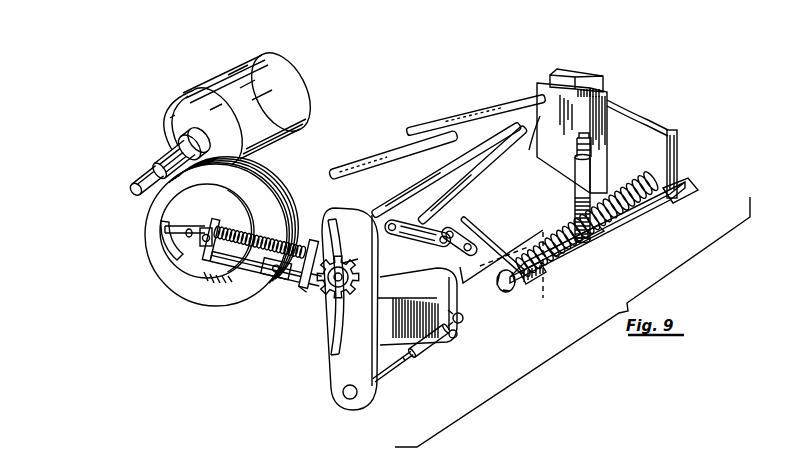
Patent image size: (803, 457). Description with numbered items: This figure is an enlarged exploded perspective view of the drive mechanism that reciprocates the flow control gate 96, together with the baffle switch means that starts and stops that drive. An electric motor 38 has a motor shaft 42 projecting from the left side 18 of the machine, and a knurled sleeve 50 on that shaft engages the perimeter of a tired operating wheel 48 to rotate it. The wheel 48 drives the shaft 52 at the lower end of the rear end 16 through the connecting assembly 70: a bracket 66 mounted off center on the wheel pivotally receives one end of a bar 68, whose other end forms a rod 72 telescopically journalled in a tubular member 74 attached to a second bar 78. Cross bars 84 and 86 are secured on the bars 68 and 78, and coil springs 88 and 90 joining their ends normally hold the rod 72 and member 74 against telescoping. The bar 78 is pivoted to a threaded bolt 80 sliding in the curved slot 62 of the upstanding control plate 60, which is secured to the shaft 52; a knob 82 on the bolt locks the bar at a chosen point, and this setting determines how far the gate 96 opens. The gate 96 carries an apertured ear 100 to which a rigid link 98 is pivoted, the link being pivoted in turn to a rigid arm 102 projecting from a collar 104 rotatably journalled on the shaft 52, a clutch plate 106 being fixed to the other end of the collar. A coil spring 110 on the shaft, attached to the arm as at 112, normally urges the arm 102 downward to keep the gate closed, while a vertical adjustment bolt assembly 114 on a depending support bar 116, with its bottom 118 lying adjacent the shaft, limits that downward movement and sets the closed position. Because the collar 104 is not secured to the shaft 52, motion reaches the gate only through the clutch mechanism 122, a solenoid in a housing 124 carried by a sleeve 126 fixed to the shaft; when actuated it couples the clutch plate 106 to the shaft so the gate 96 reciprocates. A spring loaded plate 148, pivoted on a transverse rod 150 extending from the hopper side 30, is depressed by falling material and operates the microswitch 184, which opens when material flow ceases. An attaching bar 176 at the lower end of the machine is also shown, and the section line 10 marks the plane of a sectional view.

The section line 10- 10 is at (456, 262).
The rear end 16 is at (580, 275).
The left side 18 is at (186, 304).
The hopper side 30 is at (643, 120).
The electric motor 38 is at (229, 65).
The motor shaft 42 is at (128, 186).
The tired operating wheel 48 is at (148, 222).
The knurled sleeve 50 is at (162, 158).
The shaft 52 is at (383, 378).
The control plate 60 is at (332, 380).
The curved longitudinal slot 62 is at (326, 352).
The bracket 66 is at (163, 240).
The bar 68 is at (196, 240).
The connecting assembly 70 is at (300, 220).
The rod 72 is at (272, 270).
The tubular member 74 is at (264, 280).
The second bar 78 is at (272, 285).
The threaded bolt 80 is at (343, 290).
The knob or handle 82 is at (355, 264).
The cross bar 84 is at (207, 246).
The cross bar 86 is at (312, 290).
The coil spring 88 is at (307, 244).
The coil spring 90 is at (292, 285).
The gate 96 is at (452, 172).
The rigid link 98 is at (438, 214).
The apertured ear 100 is at (384, 226).
The rigid arm 102 is at (488, 245).
The collar 104 is at (464, 327).
The clutch plate 106 is at (457, 338).
The coil spring 110 is at (626, 212).
The spring attachment 112 is at (472, 222).
The adjustment bolt assembly 114 is at (565, 181).
The support bar 116 is at (607, 106).
The bottom of bolt assembly 118 is at (598, 244).
The clutch mechanism 122 is at (433, 329).
The housing 124 is at (440, 310).
The sleeve 126 is at (428, 362).
The spring loaded plate 148 is at (452, 124).
The rod 150 is at (538, 120).
The attaching bar 176 is at (690, 196).
The microswitch 184 is at (590, 73).